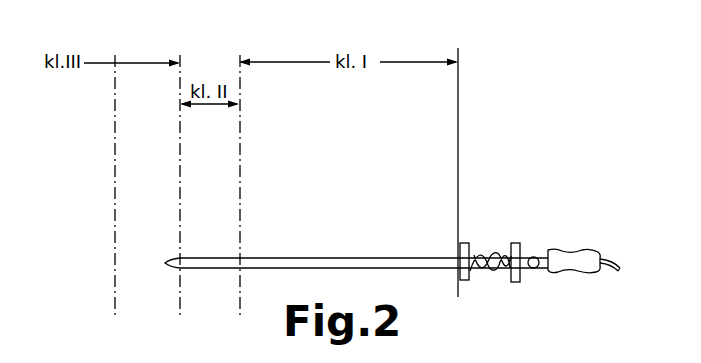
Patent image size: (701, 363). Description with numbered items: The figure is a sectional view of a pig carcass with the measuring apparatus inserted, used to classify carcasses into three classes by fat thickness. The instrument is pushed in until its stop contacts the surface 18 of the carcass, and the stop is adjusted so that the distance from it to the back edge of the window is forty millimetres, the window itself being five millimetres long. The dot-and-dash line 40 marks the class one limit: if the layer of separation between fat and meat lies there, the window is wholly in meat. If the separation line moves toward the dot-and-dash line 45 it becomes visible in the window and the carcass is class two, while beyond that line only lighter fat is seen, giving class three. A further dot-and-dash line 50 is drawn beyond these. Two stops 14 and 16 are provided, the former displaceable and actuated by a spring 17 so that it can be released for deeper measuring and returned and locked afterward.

The displaceable stop 14 is at (463, 243).
The second stop 16 is at (516, 243).
The spring 17 is at (480, 269).
The surface of the pig carcass 18 is at (458, 172).
The dot-and-dash line 40 is at (238, 174).
The dot-and-dash line 45 is at (181, 174).
The position line 50 is at (115, 174).